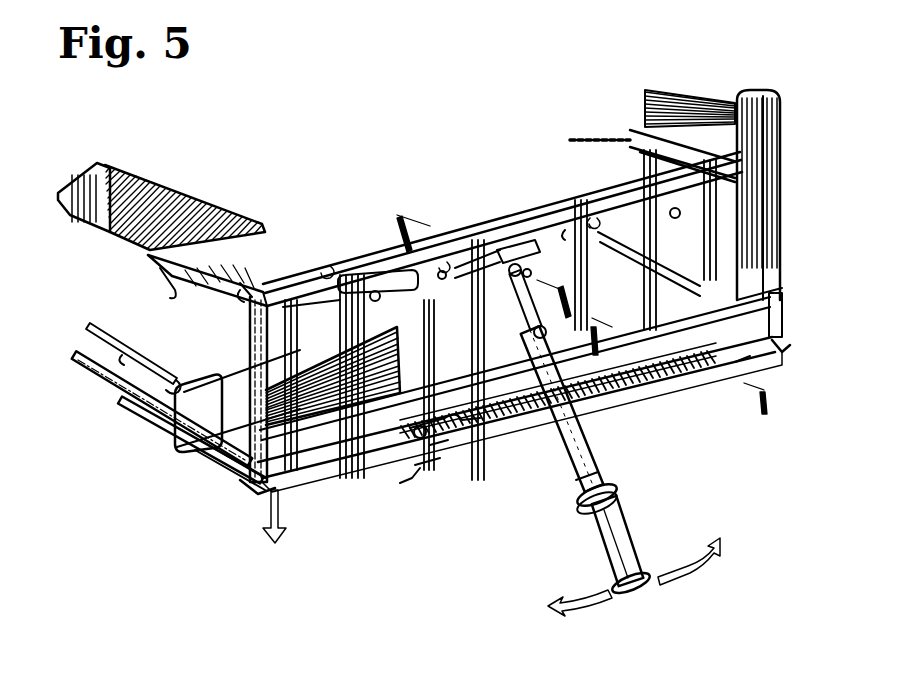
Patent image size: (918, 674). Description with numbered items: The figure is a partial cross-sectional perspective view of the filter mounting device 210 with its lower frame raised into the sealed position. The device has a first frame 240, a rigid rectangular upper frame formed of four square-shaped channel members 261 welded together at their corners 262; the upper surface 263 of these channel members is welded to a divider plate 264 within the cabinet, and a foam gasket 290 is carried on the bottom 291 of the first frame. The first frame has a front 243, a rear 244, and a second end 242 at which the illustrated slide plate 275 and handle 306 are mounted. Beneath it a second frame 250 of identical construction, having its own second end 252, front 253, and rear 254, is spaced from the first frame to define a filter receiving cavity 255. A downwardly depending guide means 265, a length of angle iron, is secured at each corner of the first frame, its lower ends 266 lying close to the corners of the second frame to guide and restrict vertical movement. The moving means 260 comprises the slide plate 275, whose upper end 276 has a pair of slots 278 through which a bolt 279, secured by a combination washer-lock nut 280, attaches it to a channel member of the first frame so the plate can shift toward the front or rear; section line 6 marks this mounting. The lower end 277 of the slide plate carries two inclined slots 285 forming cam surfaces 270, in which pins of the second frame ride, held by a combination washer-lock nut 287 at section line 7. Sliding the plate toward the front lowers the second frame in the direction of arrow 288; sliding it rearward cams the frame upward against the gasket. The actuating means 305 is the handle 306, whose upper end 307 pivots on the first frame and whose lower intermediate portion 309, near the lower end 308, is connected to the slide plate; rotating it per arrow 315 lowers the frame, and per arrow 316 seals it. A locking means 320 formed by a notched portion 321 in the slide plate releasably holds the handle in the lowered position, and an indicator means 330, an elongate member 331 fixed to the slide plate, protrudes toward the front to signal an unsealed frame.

The filter mounting device 210 is at (688, 440).
The first frame 240 is at (368, 275).
The second end 242 is at (226, 323).
The front 243 is at (175, 280).
The rear 244 is at (775, 84).
The second frame 250 is at (88, 365).
The second end 252 is at (220, 464).
The front 253 is at (116, 400).
The rear 254 is at (784, 297).
The filter receiving cavity 255 is at (100, 258).
The moving means 260 is at (400, 490).
The channel members 261 is at (240, 290).
The corners 262 is at (267, 285).
The upper surface 263 is at (480, 240).
The divider plate 264 is at (133, 193).
The guide means 265 is at (262, 338).
The lower ends 266 is at (243, 475).
The cam surface 270 is at (680, 408).
The slide plate 275 is at (689, 273).
The upper end 276 is at (593, 218).
The lower end 277 is at (555, 437).
The slots 278 is at (690, 212).
The bolt 279 is at (590, 220).
The combination washer-lock nut 280 is at (360, 275).
The inclined slots 285 is at (745, 362).
The combination washer-lock nut 287 is at (377, 483).
The arrow 288 is at (267, 517).
The foam gasket 290 is at (163, 268).
The bottom 291 is at (244, 290).
The actuating means 305 is at (562, 468).
The handle 306 is at (598, 460).
The upper end 307 is at (462, 273).
The lower end 308 is at (572, 482).
The lower intermediate portion 309 is at (447, 420).
The arrow 315 is at (587, 606).
The arrow 316 is at (693, 567).
The locking means 320 is at (423, 478).
The notched portion 321 is at (438, 442).
The indicator means 330 is at (163, 436).
The elongate member 331 is at (240, 460).
The section line 6 is at (482, 260).
The section line 7 is at (680, 362).